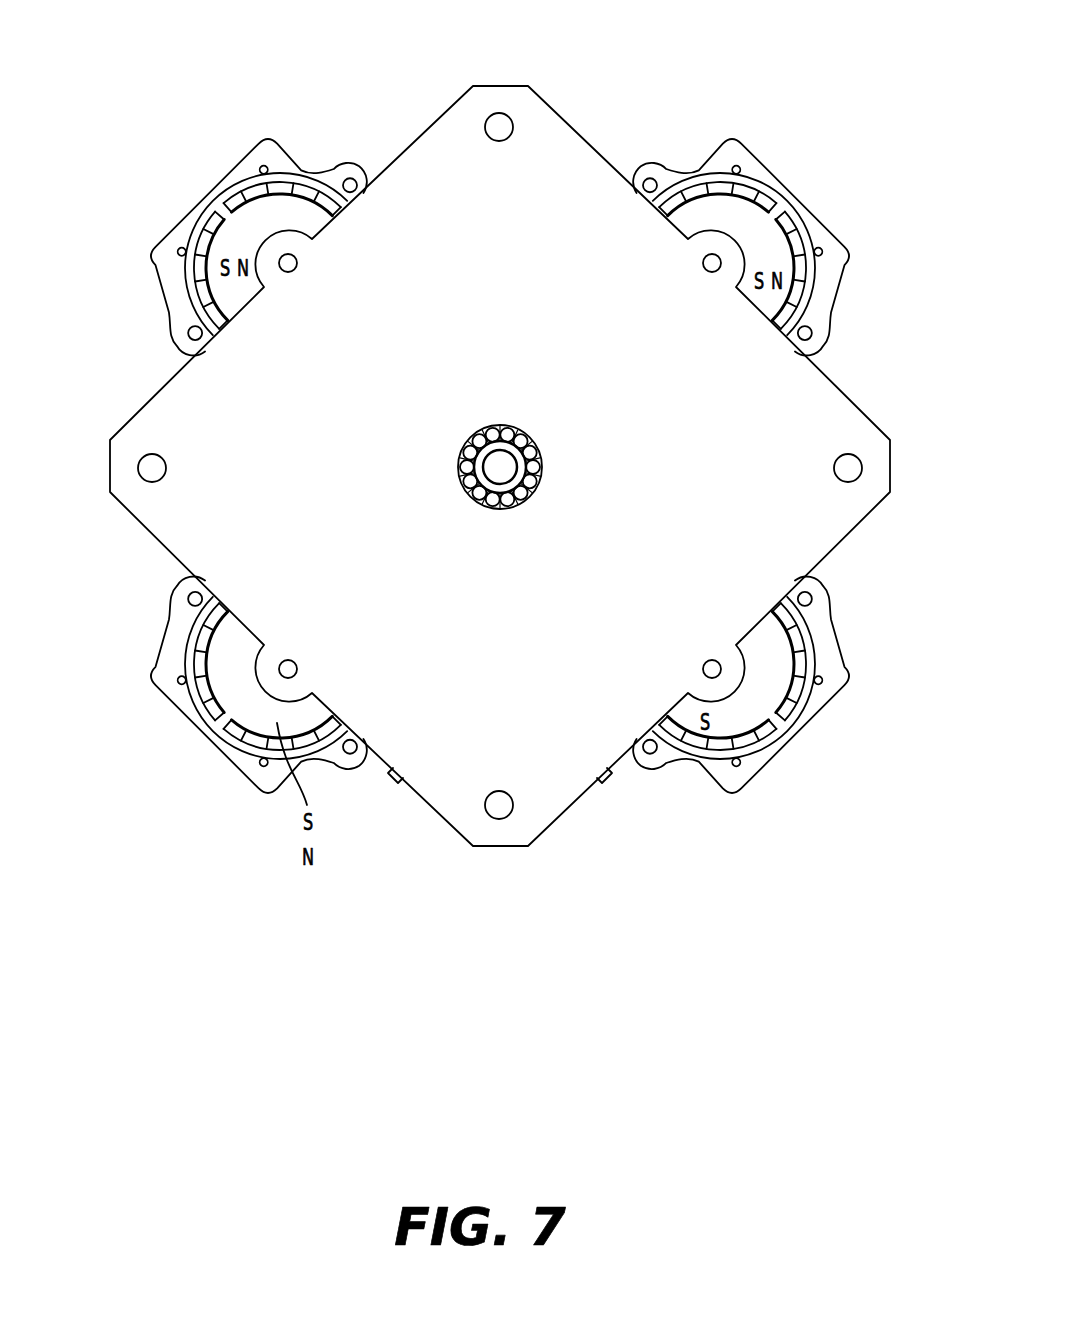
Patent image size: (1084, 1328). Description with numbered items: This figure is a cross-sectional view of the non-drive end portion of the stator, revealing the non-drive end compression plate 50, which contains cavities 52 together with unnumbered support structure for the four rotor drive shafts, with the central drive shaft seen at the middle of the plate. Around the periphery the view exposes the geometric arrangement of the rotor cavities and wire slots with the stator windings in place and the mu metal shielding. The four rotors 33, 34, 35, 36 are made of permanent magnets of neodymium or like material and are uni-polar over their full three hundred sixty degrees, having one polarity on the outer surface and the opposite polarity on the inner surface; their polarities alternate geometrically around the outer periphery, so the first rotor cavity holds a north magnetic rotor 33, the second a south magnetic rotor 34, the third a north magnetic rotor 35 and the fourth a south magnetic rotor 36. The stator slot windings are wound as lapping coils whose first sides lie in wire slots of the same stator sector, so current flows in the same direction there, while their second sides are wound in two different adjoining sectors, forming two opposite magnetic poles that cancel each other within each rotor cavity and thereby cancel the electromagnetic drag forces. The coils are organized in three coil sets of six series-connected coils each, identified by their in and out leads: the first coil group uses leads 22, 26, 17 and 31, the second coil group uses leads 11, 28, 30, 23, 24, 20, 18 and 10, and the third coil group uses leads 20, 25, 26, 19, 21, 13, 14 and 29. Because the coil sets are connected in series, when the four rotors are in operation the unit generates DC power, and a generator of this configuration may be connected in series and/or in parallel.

The non-drive end compression plate 50 is at (822, 405).
The cavities 52 is at (498, 113).
The coil lead 10 is at (655, 195).
The coil lead 11 is at (782, 193).
The coil lead 13 is at (812, 210).
The coil lead 14 is at (813, 334).
The north magnetic rotor 33 is at (728, 207).
The coil lead 17 is at (815, 599).
The coil lead 18 is at (800, 715).
The coil lead 19 is at (777, 725).
The coil lead 20 is at (650, 748).
The coil lead 21 is at (603, 783).
The coil lead 22 is at (397, 783).
The south magnetic rotor 36 is at (740, 718).
The coil lead 23 is at (350, 757).
The coil lead 24 is at (215, 750).
The coil lead 25 is at (187, 727).
The coil lead 26 is at (187, 599).
The north magnetic rotor 35 is at (227, 670).
The coil lead 28 is at (187, 334).
The coil lead 29 is at (203, 222).
The coil lead 30 is at (218, 205).
The coil lead 31 is at (350, 185).
The south magnetic rotor 34 is at (272, 207).